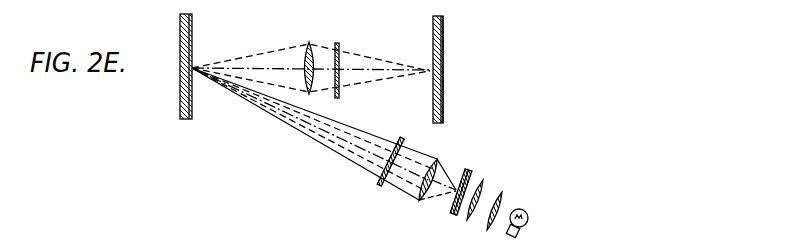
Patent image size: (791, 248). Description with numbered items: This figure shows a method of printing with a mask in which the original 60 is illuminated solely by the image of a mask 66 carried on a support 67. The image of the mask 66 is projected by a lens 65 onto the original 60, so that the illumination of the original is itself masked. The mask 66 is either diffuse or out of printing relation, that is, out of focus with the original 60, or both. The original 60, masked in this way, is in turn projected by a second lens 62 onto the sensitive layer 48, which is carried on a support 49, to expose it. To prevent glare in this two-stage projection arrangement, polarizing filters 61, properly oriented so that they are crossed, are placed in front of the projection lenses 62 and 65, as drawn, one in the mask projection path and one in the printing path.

The original 60 is at (192, 33).
The polarizing filter 61 is at (338, 43).
The lens 62 is at (309, 43).
The sensitive layer 48 is at (433, 24).
The support 49 is at (443, 47).
The lens 65 is at (438, 159).
The mask 66 is at (466, 169).
The support 67 is at (472, 172).